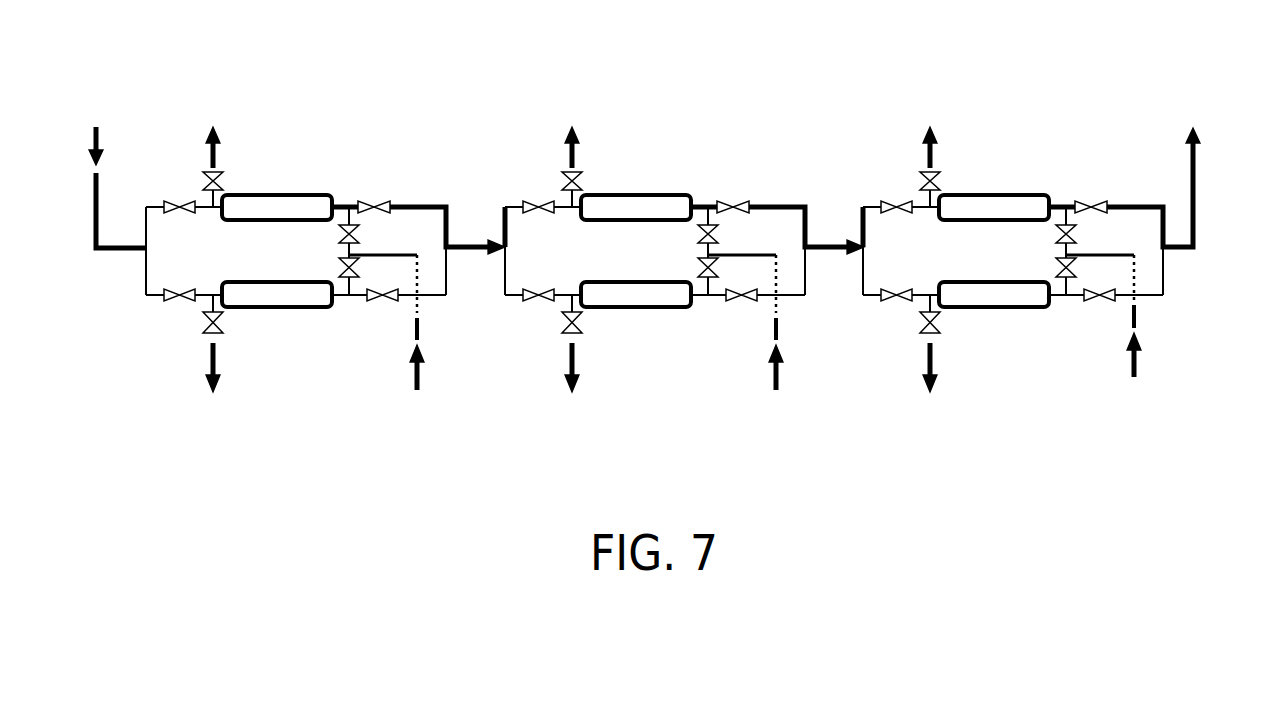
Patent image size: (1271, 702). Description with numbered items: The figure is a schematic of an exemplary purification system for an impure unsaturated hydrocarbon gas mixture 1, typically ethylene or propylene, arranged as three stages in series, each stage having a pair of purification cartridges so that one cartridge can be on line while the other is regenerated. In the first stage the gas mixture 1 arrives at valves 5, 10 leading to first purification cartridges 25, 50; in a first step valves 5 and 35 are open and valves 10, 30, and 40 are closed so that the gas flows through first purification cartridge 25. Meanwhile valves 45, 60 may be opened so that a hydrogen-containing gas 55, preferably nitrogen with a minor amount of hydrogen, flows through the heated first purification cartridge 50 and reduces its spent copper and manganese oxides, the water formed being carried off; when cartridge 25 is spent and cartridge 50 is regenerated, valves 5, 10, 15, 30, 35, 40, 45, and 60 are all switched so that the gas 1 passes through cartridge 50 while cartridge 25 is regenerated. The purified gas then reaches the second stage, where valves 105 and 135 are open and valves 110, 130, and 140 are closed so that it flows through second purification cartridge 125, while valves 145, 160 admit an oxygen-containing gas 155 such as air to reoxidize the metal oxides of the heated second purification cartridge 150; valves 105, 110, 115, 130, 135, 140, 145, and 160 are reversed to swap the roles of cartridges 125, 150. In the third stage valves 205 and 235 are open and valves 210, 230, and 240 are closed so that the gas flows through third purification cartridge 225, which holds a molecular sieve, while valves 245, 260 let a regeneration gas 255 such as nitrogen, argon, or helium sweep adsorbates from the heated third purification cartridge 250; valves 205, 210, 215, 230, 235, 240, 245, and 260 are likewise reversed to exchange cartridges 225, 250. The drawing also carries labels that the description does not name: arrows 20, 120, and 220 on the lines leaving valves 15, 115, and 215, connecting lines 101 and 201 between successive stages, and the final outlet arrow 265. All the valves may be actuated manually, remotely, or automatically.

The impure unsaturated hydrocarbon gas mixture 1 is at (96, 125).
The valve 5 is at (177, 206).
The valve 10 is at (174, 307).
The valve 15 is at (223, 177).
The product stream 20 is at (213, 125).
The first purification cartridge 25 is at (277, 193).
The valve 30 is at (340, 232).
The valve 35 is at (374, 204).
The valve 40 is at (383, 300).
The valve 45 is at (222, 330).
The first purification cartridge 50 is at (275, 308).
The hydrogen-containing gas 55 is at (417, 393).
The valve 60 is at (357, 268).
The intermediate stream 101 is at (474, 255).
The valve 105 is at (504, 180).
The valve 110 is at (510, 332).
The valve 115 is at (607, 174).
The product stream 120 is at (614, 126).
The second purification cartridge 125 is at (647, 181).
The valve 130 is at (732, 233).
The valve 135 is at (761, 184).
The valve 140 is at (741, 338).
The valve 145 is at (599, 344).
The second purification cartridge 150 is at (648, 320).
The oxygen-containing gas 155 is at (772, 343).
The valve 160 is at (732, 268).
The intermediate stream 201 is at (777, 265).
The valve 205 is at (866, 184).
The valve 210 is at (868, 332).
The valve 215 is at (965, 174).
The product stream 220 is at (972, 126).
The third purification cartridge 225 is at (1005, 181).
The valve 230 is at (1090, 233).
The valve 235 is at (1119, 184).
The valve 240 is at (1087, 340).
The valve 245 is at (957, 348).
The third purification cartridge 250 is at (996, 312).
The third purification cartridge regeneration gas 255 is at (1131, 338).
The valve 260 is at (1090, 268).
The product stream 265 is at (1148, 182).